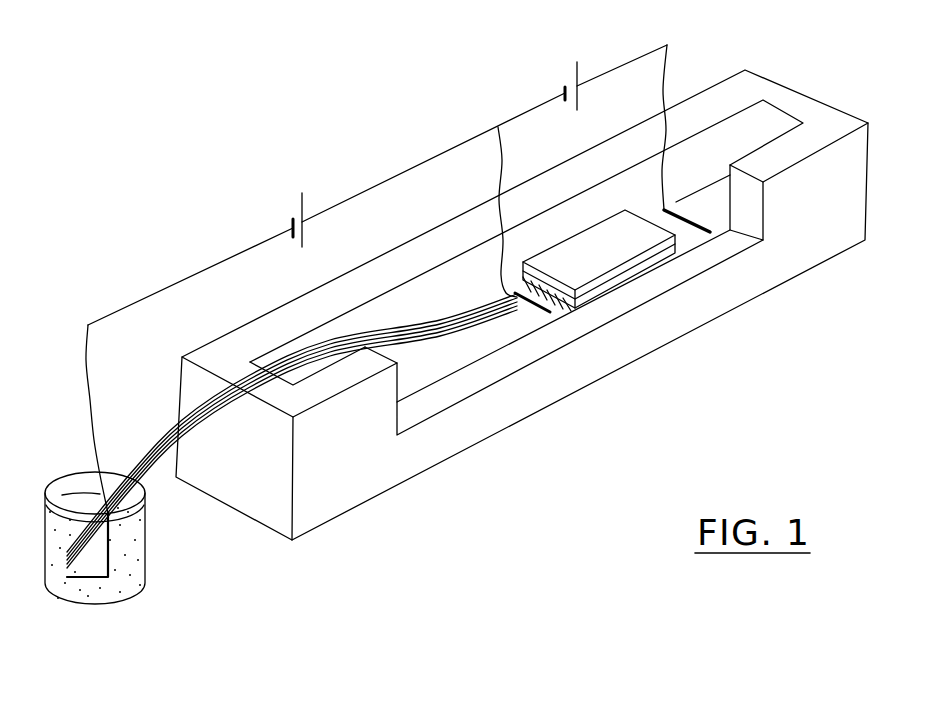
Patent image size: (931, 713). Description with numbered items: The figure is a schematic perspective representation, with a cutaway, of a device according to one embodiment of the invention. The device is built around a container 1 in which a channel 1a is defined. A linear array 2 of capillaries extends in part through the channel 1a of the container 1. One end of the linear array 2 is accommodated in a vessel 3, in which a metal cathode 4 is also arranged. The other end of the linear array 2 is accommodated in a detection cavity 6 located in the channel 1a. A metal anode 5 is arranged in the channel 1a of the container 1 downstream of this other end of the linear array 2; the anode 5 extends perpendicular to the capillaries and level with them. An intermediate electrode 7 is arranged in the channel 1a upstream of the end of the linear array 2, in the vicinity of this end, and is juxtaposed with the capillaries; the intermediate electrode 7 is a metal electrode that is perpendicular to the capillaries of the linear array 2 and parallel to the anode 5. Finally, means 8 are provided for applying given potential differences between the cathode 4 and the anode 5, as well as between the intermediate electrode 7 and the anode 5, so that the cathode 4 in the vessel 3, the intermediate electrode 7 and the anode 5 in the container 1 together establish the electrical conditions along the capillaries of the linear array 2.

The container 1 is at (348, 482).
The channel 1a is at (700, 183).
The linear array of capillaries 2 is at (503, 330).
The vessel 3 is at (140, 557).
The metal cathode 4 is at (92, 582).
The metal anode 5 is at (699, 232).
The detection cavity 6 is at (588, 255).
The intermediate electrode 7 is at (498, 304).
The means for applying potential differences 8 is at (368, 151).